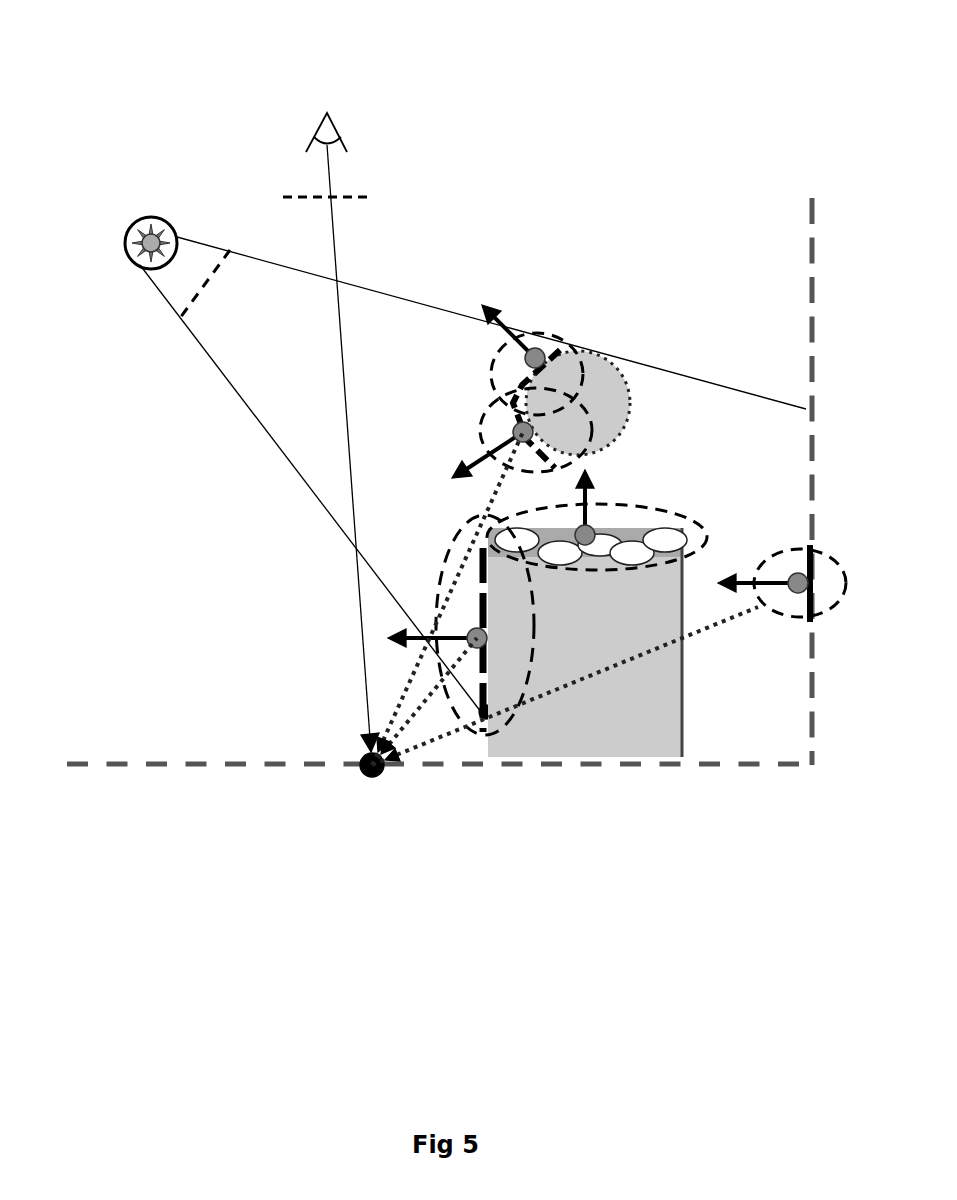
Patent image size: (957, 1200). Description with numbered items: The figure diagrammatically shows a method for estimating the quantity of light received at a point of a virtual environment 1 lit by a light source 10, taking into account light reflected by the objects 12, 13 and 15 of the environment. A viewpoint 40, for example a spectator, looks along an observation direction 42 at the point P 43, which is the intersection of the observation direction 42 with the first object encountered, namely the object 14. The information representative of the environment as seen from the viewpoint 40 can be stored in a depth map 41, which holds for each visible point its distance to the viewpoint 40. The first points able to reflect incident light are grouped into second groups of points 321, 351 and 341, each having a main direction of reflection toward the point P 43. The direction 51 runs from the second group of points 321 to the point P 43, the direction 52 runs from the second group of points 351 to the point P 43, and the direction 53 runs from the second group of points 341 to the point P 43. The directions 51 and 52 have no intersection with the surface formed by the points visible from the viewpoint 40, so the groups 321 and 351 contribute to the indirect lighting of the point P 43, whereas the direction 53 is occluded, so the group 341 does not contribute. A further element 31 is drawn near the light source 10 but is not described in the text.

The virtual environment 1 is at (623, 203).
The light source 10 is at (140, 232).
The object 12 is at (600, 383).
The object 13 is at (633, 727).
The object 14 is at (243, 766).
The object 15 is at (812, 320).
The distance segment 31 is at (192, 298).
The viewpoint 40 is at (320, 130).
The depth map 41 is at (350, 193).
The observation direction 42 is at (335, 243).
The point P 43 is at (382, 776).
The direction 51 is at (390, 745).
The direction 52 is at (487, 512).
The direction 53 is at (705, 630).
The second group of points D1 321 is at (530, 608).
The second group of points D3 341 is at (828, 558).
The second group of points D4 351 is at (487, 408).